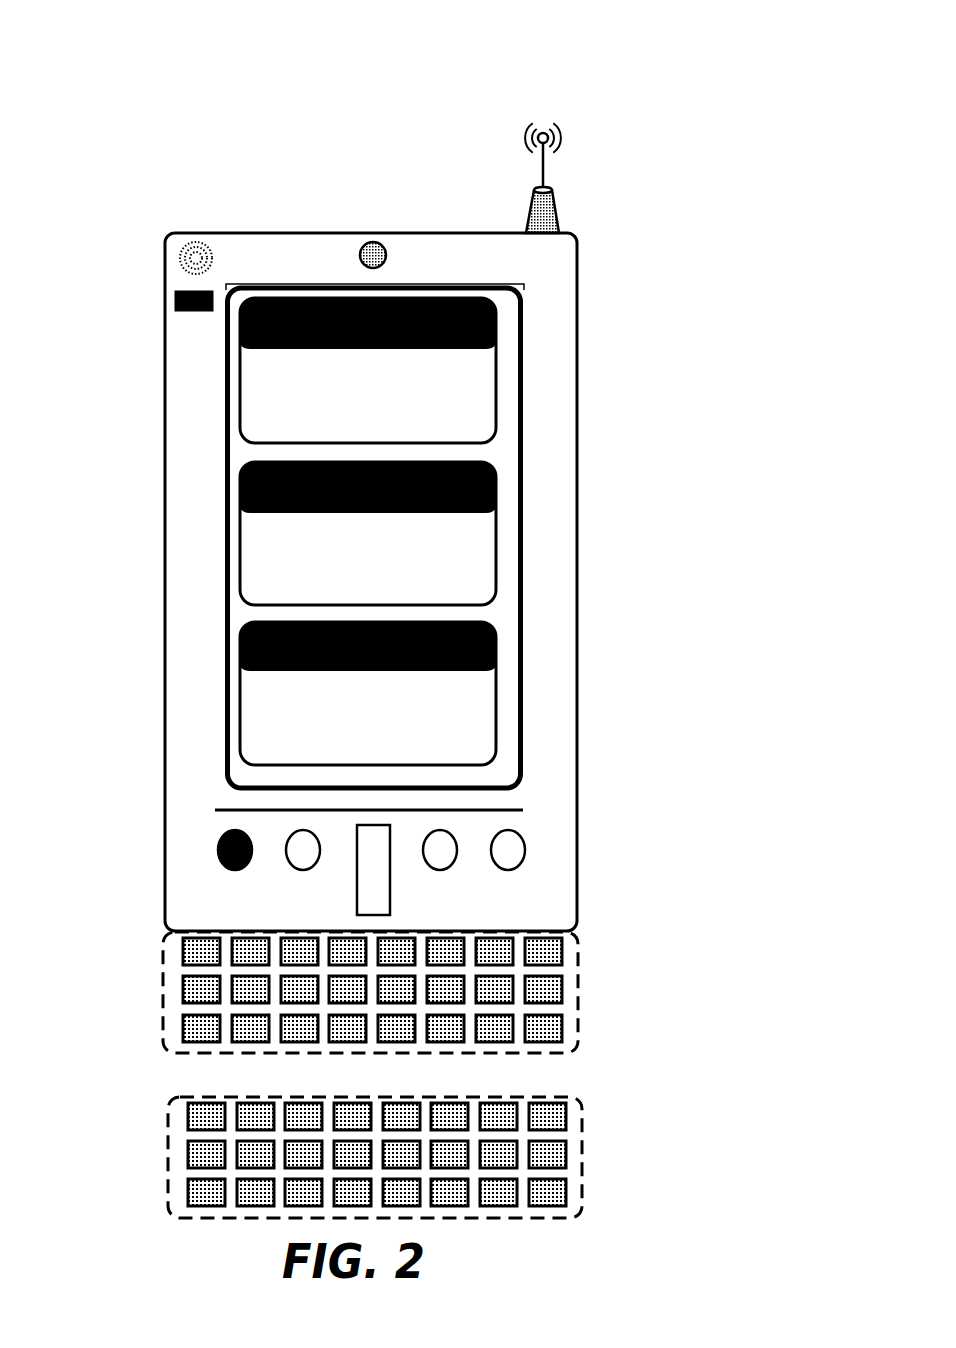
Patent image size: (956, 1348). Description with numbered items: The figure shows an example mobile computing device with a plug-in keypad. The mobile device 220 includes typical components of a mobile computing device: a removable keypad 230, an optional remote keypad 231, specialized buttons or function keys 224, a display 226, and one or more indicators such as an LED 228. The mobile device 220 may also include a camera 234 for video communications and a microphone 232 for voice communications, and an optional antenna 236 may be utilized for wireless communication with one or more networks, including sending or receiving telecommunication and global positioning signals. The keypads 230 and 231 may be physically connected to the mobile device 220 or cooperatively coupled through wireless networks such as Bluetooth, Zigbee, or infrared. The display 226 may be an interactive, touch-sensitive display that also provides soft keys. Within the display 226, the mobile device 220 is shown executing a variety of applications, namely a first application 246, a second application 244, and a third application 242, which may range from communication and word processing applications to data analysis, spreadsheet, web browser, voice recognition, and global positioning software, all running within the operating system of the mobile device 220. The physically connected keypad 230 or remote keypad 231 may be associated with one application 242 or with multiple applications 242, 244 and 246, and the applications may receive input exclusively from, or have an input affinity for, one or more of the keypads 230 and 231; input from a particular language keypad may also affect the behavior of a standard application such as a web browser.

The mobile device 220 is at (386, 57).
The specialized buttons 224 is at (510, 868).
The display 226 is at (225, 765).
The indicator 228 is at (175, 298).
The removable keypad 230 is at (163, 1020).
The remote keypad 231 is at (168, 1185).
The microphone 232 is at (180, 258).
The camera 234 is at (384, 246).
The antenna 236 is at (553, 194).
The application 3 242 is at (240, 705).
The application 2 244 is at (240, 570).
The application 1 246 is at (240, 380).